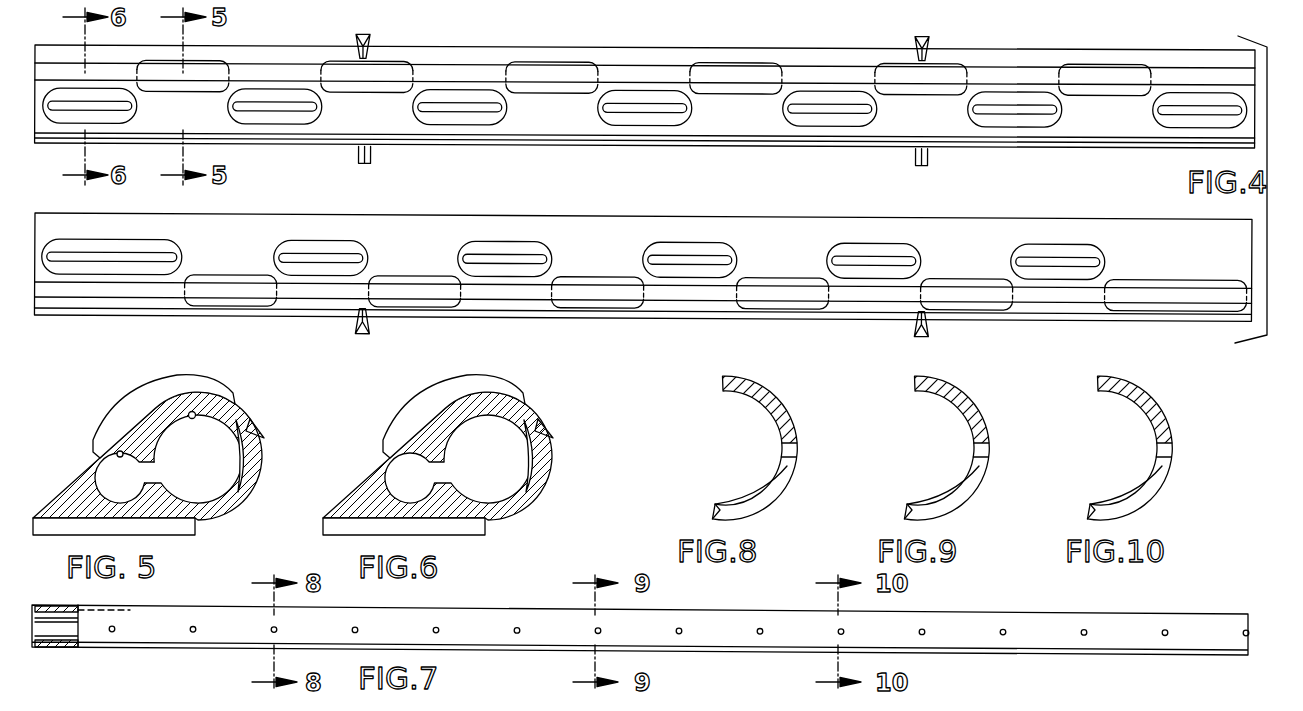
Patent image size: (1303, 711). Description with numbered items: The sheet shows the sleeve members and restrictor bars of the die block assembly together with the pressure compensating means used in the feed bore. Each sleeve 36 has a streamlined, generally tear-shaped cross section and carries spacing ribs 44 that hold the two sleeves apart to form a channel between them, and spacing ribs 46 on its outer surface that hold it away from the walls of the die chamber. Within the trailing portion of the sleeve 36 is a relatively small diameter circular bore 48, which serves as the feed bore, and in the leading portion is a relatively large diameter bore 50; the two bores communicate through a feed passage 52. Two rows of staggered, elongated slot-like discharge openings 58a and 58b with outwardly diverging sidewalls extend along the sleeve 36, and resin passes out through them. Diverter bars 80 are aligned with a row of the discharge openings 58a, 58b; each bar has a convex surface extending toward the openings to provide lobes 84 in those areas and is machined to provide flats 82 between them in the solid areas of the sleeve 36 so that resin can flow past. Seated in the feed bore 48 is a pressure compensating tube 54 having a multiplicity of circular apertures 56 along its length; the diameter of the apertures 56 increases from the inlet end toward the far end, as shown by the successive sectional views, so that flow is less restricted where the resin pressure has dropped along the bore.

In FIG. 4, the sleeve 36 is at (797, 48).
In FIG. 5, the sleeve 36 is at (81, 463).
In FIG. 6, the sleeve 36 is at (371, 465).
In FIG. 4, the spacing rib 44 is at (358, 157).
In FIG. 4, the spacing rib 46 is at (371, 37).
In FIG. 5, the spacing rib 46 is at (124, 410).
In FIG. 6, the spacing rib 46 is at (421, 402).
In FIG. 5, the small diameter circular bore 48 is at (117, 451).
In FIG. 5, the large diameter bore 50 is at (190, 411).
In FIG. 5, the feed passage 52 is at (154, 483).
In FIG. 7, the pressure compensating tube 54 is at (733, 612).
In FIG. 8, the pressure compensating tube 54 is at (775, 398).
In FIG. 9, the pressure compensating tube 54 is at (967, 398).
In FIG. 10, the pressure compensating tube 54 is at (1150, 400).
In FIG. 7, the circular aperture 56 is at (191, 633).
In FIG. 8, the circular aperture 56 is at (798, 448).
In FIG. 9, the circular aperture 56 is at (990, 448).
In FIG. 10, the circular aperture 56 is at (1173, 448).
In FIG. 4, the discharge opening 58a is at (547, 62).
In FIG. 5, the discharge opening 58a is at (238, 427).
In FIG. 4, the discharge opening 58b is at (645, 118).
In FIG. 6, the discharge opening 58b is at (542, 480).
In FIG. 4, the diverter bar 80 is at (622, 68).
In FIG. 5, the diverter bar 80 is at (258, 428).
In FIG. 6, the diverter bar 80 is at (549, 424).
In FIG. 6, the flat 82 is at (527, 419).
In FIG. 5, the lobe 84 is at (236, 421).